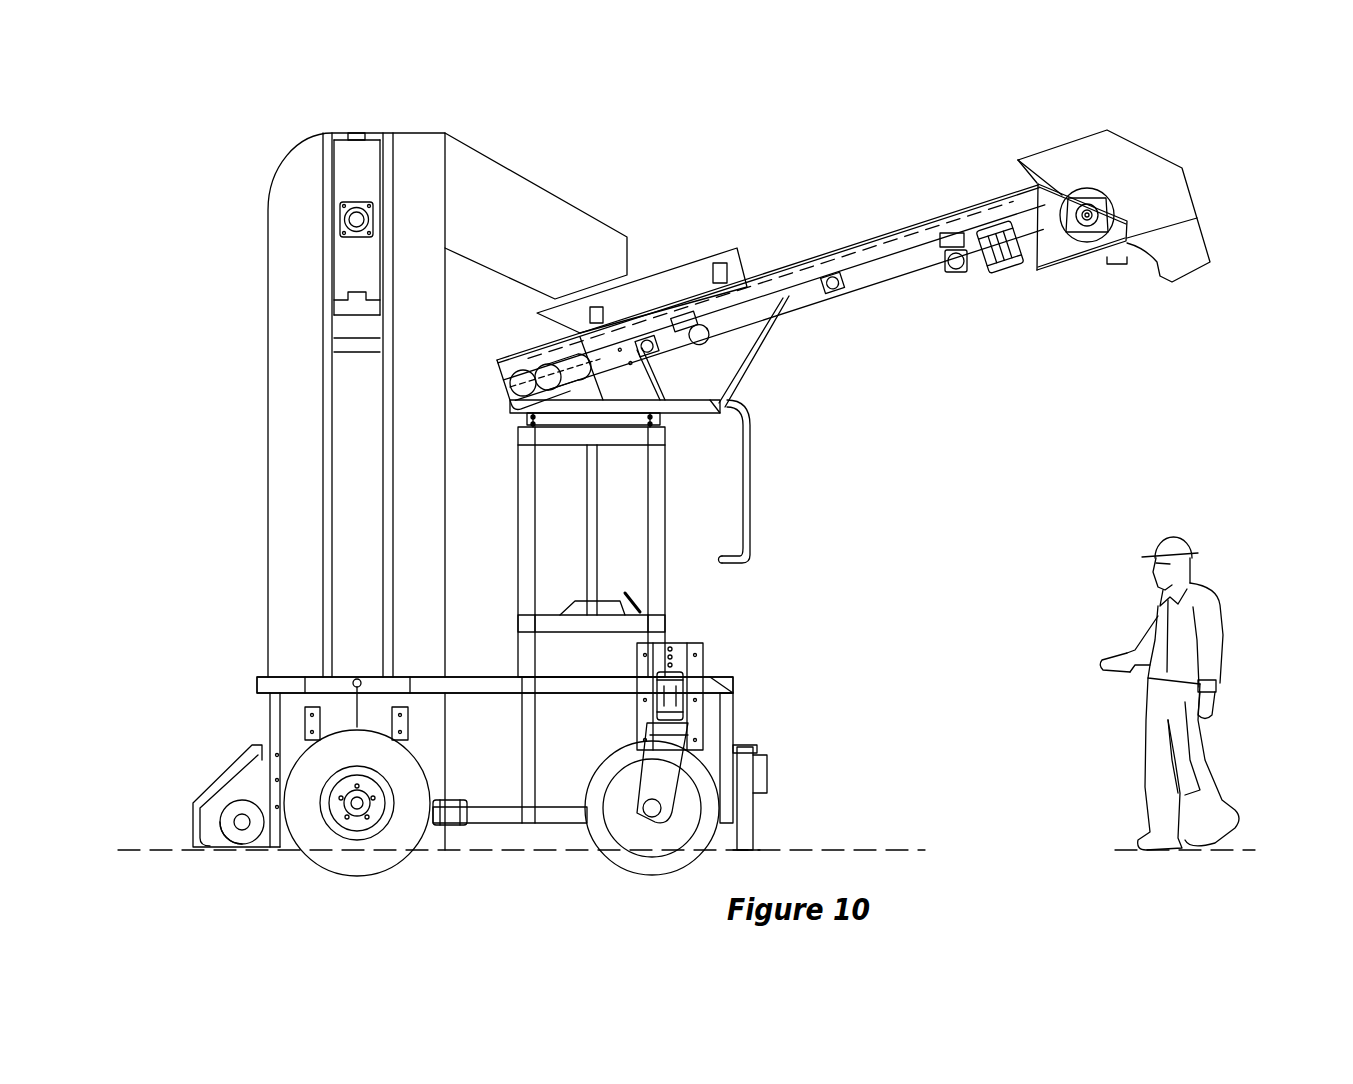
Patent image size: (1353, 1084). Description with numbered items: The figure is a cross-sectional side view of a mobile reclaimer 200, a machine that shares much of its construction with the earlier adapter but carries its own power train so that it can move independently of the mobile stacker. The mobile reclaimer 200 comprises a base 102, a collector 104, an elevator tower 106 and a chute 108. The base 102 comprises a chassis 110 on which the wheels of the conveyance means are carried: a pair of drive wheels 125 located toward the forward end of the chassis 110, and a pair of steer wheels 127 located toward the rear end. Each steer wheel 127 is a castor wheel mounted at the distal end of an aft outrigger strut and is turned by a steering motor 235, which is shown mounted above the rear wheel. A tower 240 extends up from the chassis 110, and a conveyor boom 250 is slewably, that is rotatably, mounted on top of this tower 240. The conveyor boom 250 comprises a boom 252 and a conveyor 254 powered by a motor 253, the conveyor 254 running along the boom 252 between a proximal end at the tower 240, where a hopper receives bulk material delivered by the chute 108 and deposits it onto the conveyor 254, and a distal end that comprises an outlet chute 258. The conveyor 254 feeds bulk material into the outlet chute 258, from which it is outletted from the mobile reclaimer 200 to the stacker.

The base 102 is at (736, 734).
The chassis 110 is at (495, 685).
The collector 104 is at (217, 768).
The elevator tower 106 is at (297, 443).
The chute 108 is at (532, 228).
The drive wheels 125 is at (327, 860).
The steer wheels 127 is at (630, 858).
The mobile reclaimer 200 is at (913, 180).
The steering motor 235 is at (680, 693).
The tower 240 is at (660, 573).
The conveyor boom 250 is at (1157, 149).
The boom 252 is at (847, 255).
The motor 253 is at (982, 270).
The conveyor 254 is at (1059, 266).
The outlet chute 258 is at (1167, 213).